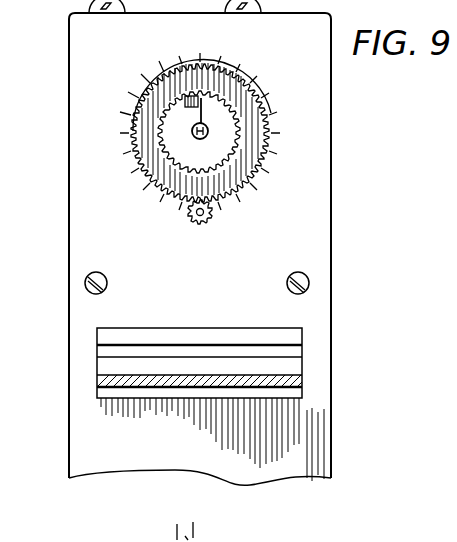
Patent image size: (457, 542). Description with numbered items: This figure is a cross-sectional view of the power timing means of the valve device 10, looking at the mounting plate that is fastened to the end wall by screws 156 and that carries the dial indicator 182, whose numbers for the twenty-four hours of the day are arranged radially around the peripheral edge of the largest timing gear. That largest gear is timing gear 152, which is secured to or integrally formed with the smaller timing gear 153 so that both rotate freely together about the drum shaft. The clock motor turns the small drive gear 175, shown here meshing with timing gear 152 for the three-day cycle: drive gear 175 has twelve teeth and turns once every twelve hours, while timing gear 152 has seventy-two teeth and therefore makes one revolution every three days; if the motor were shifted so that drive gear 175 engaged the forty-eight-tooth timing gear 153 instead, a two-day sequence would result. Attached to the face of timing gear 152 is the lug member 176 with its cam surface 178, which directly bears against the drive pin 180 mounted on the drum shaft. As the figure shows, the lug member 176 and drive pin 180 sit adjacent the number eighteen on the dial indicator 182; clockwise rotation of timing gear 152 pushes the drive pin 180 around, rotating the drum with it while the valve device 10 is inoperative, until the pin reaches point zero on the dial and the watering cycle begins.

The valve device 10 is at (0, 32).
The timing gear 152 is at (263, 145).
The timing gear 153 is at (208, 129).
The screws 156 is at (287, 284).
The drive gear 175 is at (196, 228).
The lug member 176 is at (187, 96).
The cam surface 178 is at (186, 104).
The drive pin 180 is at (198, 117).
The dial indicator 182 is at (296, 179).